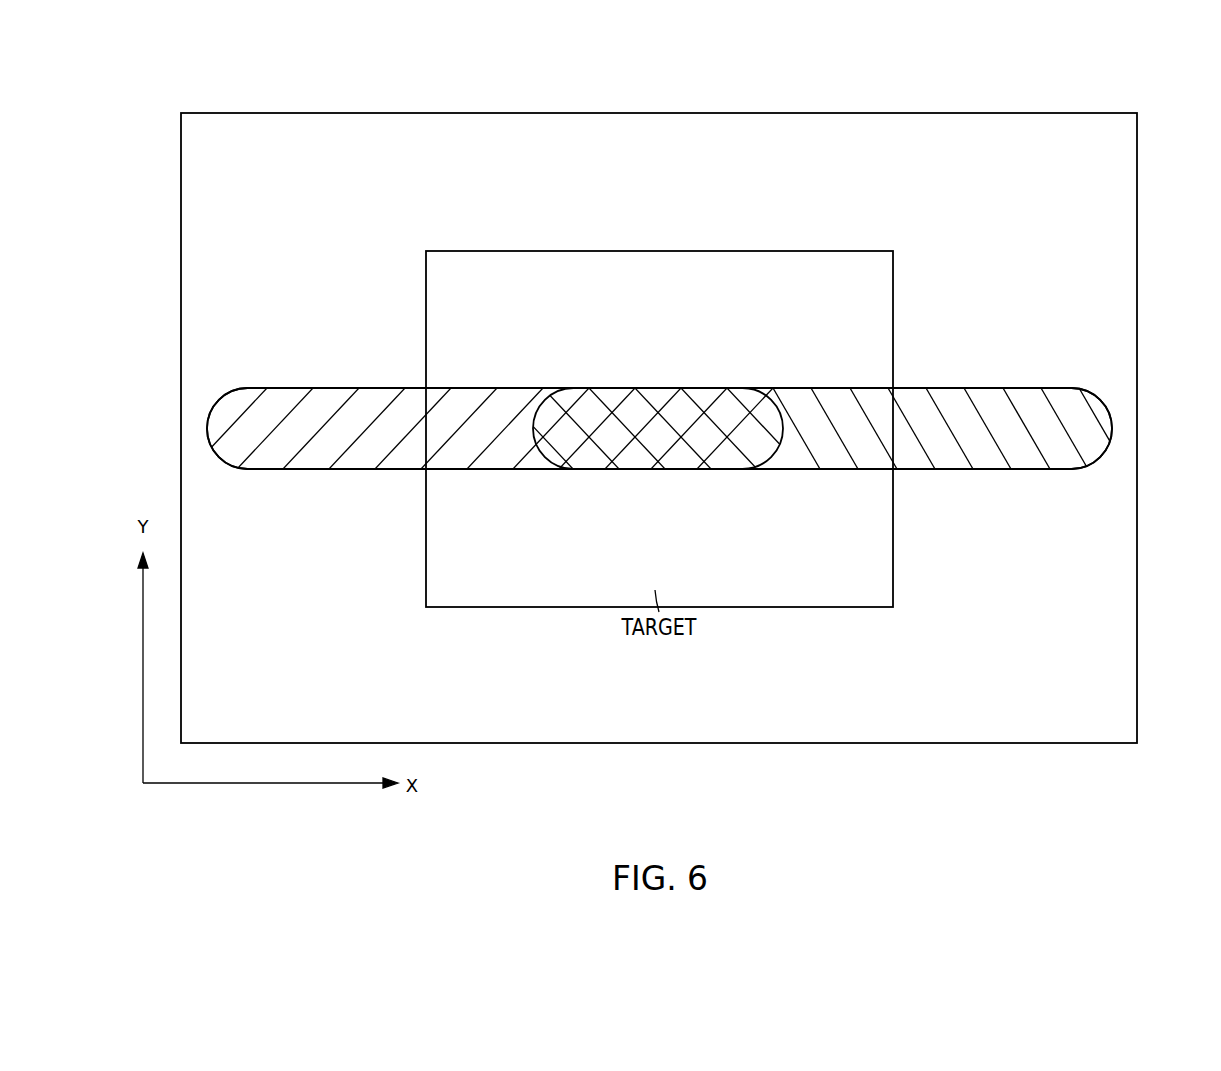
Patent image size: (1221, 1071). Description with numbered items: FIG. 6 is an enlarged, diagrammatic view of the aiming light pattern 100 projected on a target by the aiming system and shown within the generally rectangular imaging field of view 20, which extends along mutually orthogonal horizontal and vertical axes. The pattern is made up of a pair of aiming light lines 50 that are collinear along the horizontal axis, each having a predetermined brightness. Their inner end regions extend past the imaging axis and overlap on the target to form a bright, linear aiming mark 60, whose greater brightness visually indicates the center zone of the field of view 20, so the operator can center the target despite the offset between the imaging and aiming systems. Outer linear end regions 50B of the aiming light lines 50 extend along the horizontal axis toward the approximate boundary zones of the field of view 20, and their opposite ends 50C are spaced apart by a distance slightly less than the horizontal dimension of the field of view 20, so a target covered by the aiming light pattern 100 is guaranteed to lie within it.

The imaging field of view 20 is at (1006, 202).
The aiming mark 60 is at (660, 395).
The aiming light pattern 100 is at (247, 385).
The aiming light line 50 is at (387, 472).
The outer linear end region 50B is at (268, 460).
The opposite end 50C is at (207, 428).